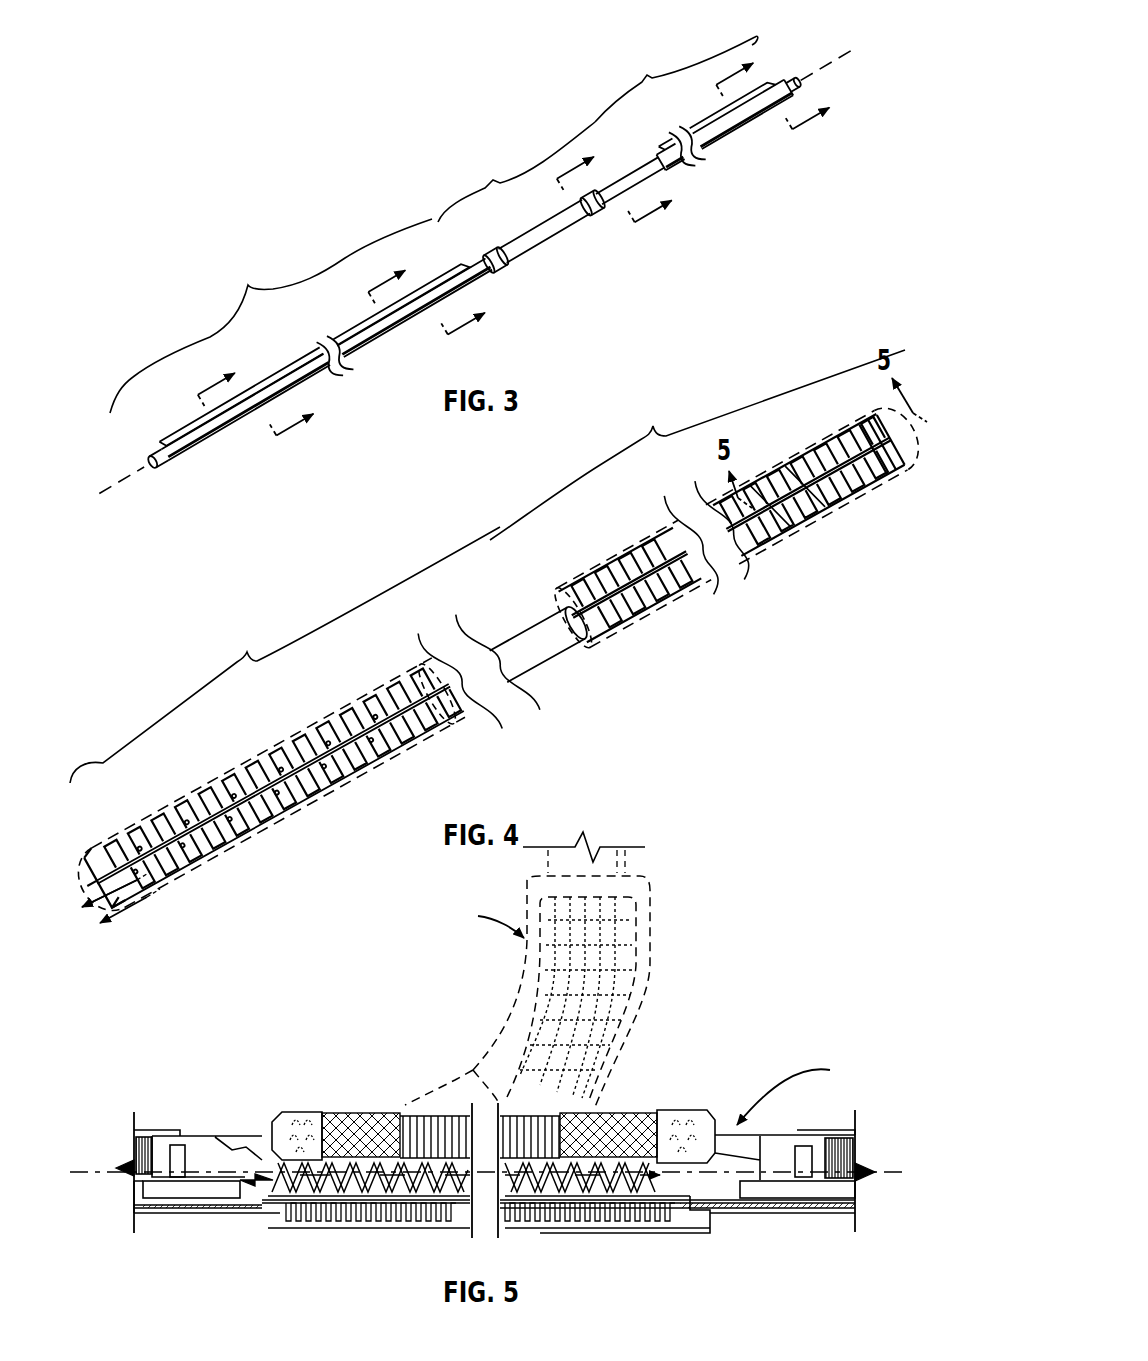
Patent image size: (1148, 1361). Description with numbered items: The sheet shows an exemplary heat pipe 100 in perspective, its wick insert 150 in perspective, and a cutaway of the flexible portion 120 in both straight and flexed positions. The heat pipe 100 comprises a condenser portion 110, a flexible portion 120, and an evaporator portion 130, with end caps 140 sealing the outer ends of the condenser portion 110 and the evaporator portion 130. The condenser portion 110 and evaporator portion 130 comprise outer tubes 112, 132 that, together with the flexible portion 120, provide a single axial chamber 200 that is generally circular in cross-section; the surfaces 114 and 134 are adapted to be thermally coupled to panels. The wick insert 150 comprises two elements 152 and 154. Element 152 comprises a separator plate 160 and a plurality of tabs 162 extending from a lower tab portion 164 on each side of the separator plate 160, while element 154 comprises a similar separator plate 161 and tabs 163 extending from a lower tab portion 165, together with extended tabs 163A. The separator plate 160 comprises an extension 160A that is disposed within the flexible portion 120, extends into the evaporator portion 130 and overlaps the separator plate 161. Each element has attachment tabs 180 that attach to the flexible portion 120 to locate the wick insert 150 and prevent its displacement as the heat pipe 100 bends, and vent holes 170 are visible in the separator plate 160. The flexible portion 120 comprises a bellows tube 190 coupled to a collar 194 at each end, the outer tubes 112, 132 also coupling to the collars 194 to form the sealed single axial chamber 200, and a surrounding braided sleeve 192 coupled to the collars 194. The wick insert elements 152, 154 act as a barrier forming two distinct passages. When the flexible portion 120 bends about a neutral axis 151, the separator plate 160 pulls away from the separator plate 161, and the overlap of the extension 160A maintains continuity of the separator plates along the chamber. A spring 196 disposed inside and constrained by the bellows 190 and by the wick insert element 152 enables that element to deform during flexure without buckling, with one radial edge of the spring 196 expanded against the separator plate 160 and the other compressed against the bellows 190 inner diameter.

In FIG. 3, the heat pipe 100 is at (205, 152).
In FIG. 3, the condenser portion 110 is at (305, 346).
In FIG. 3, the outer tube 112 is at (168, 460).
In FIG. 5, the outer tube 112 is at (172, 1128).
In FIG. 3, the surface 114 is at (206, 422).
In FIG. 3, the flexible portion 120 is at (552, 198).
In FIG. 5, the flexible portion 120 is at (440, 1015).
In FIG. 3, the evaporator portion 130 is at (697, 107).
In FIG. 3, the outer tube 132 is at (797, 82).
In FIG. 5, the outer tube 132 is at (838, 1140).
In FIG. 3, the surface 134 is at (720, 122).
In FIG. 3, the end cap 140 is at (122, 478).
In FIG. 4, the wick insert 150 is at (410, 558).
In FIG. 5, the neutral axis 151 is at (92, 1178).
In FIG. 4, the wick insert element 152 is at (283, 724).
In FIG. 5, the wick insert element 152 is at (198, 1190).
In FIG. 4, the wick insert element 154 is at (709, 498).
In FIG. 5, the wick insert element 154 is at (775, 1196).
In FIG. 4, the separator plate 160 is at (205, 852).
In FIG. 4, the extension 160A is at (527, 672).
In FIG. 5, the extension 160A is at (640, 1215).
In FIG. 4, the separator plate 161 is at (800, 507).
In FIG. 5, the separator plate 161 is at (725, 1208).
In FIG. 4, the tabs 162 is at (245, 828).
In FIG. 4, the tabs 163 is at (752, 533).
In FIG. 4, the extended tabs 163A is at (933, 480).
In FIG. 4, the lower tab portion 164 is at (303, 817).
In FIG. 4, the lower tab portion 165 is at (818, 520).
In FIG. 4, the vent holes 170 is at (160, 814).
In FIG. 4, the attachment tabs 180 is at (443, 730).
In FIG. 5, the bellows tube 190 is at (402, 1114).
In FIG. 5, the braided sleeve 192 is at (350, 1112).
In FIG. 5, the collar 194 is at (292, 1112).
In FIG. 5, the spring 196 is at (473, 1070).
In FIG. 5, the single axial chamber 200 is at (128, 1152).